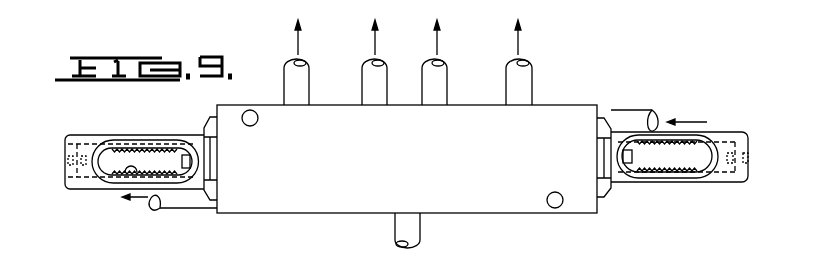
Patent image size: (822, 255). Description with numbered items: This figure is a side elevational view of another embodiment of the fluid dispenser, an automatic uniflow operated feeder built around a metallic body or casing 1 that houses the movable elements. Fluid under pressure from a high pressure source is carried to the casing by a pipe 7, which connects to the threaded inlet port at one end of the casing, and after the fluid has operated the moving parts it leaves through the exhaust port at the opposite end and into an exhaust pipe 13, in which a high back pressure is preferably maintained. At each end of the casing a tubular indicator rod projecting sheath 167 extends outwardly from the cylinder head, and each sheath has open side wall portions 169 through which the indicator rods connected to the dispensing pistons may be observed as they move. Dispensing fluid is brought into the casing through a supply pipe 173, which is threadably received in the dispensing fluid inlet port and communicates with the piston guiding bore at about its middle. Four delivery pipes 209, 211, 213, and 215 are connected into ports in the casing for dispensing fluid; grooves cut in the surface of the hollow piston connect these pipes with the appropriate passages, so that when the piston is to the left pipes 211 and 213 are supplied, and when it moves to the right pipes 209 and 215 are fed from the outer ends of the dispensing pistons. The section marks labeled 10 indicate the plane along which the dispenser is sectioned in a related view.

The body or casing 1 is at (567, 109).
The pipe 7 is at (626, 115).
The section line 10- 10 is at (37, 218).
The exhaust pipe 13 is at (182, 209).
The indicator rod projecting sheath 167 is at (137, 138).
The open side wall portions 169 is at (126, 167).
The supply pipe 173 is at (417, 228).
The delivery pipe 209 is at (302, 88).
The delivery pipe 211 is at (381, 88).
The delivery pipe 213 is at (442, 88).
The delivery pipe 215 is at (528, 88).